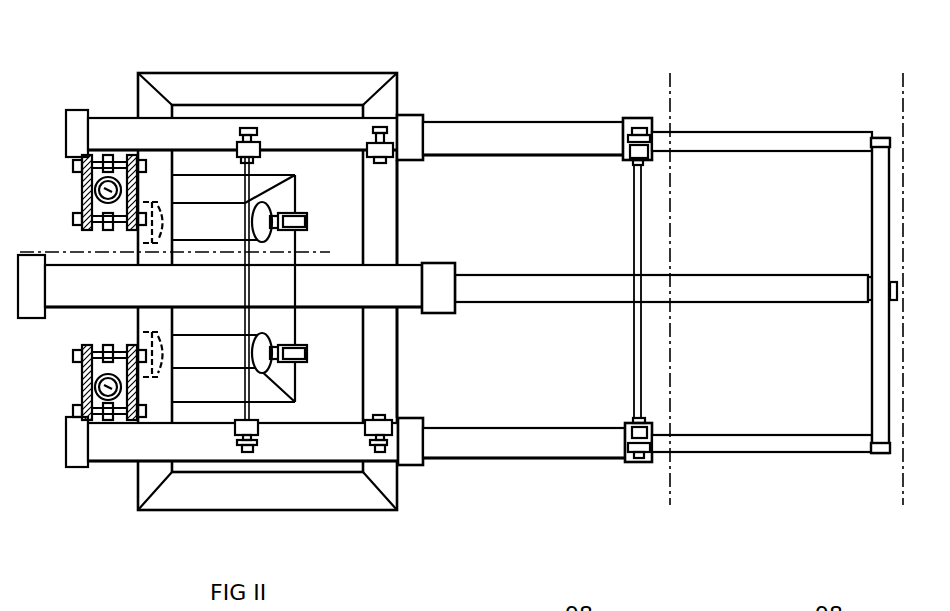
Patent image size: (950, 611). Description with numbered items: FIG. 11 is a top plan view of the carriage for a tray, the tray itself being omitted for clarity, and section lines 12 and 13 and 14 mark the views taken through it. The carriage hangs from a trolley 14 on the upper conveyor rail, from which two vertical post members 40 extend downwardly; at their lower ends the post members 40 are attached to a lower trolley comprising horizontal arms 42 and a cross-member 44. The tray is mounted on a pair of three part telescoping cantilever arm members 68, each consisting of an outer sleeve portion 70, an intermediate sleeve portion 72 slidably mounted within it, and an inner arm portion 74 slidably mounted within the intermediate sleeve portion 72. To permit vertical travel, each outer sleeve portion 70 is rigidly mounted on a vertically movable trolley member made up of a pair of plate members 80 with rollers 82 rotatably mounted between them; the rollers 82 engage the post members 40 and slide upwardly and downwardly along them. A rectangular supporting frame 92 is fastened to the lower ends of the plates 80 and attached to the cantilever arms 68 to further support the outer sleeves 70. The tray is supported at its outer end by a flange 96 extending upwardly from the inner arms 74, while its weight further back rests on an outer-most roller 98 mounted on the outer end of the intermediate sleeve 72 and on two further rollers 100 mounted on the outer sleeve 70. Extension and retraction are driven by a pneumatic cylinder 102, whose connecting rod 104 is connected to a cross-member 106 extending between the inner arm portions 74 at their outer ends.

The section line 12- 12 is at (673, 85).
The section line 13- 13 is at (915, 85).
The trolley 14 is at (61, 215).
The vertical post member 40 is at (82, 200).
The horizontal arm 42 is at (278, 415).
The cross-member 44 is at (287, 328).
The telescoping cantilever arm member 68 is at (419, 82).
The outer sleeve portion 70 is at (335, 105).
The intermediate sleeve portion 72 is at (527, 131).
The inner arm portion 74 is at (760, 140).
The plate member 80 is at (135, 150).
The roller 82 is at (108, 156).
The rectangular supporting frame 92 is at (400, 358).
The flange 96 is at (885, 138).
The outer-most roller 98 is at (633, 159).
The roller 100 is at (262, 143).
The pneumatic cylinder 102 is at (408, 273).
The connecting rod 104 is at (553, 273).
The cross-member 106 is at (872, 252).